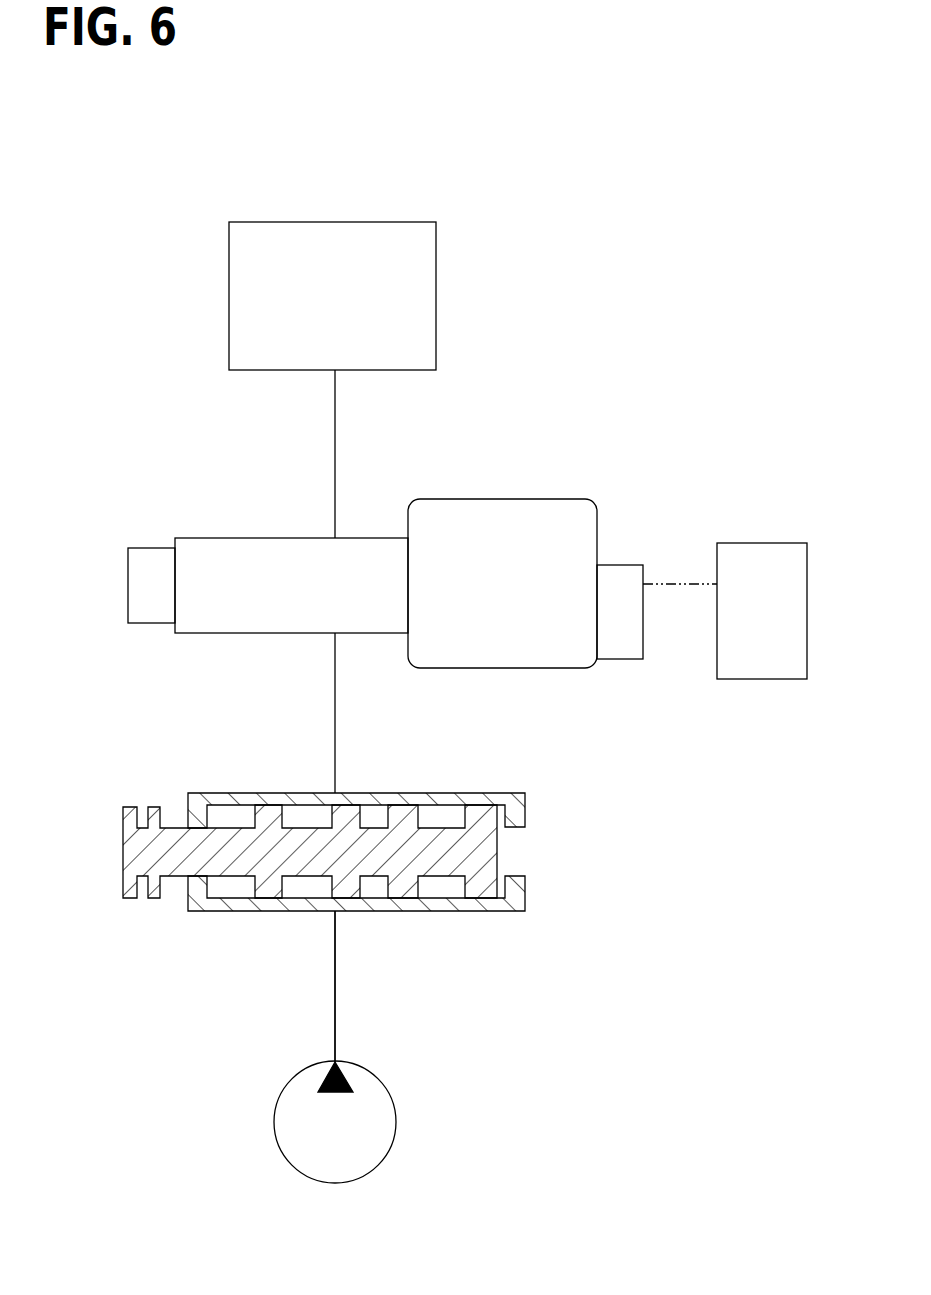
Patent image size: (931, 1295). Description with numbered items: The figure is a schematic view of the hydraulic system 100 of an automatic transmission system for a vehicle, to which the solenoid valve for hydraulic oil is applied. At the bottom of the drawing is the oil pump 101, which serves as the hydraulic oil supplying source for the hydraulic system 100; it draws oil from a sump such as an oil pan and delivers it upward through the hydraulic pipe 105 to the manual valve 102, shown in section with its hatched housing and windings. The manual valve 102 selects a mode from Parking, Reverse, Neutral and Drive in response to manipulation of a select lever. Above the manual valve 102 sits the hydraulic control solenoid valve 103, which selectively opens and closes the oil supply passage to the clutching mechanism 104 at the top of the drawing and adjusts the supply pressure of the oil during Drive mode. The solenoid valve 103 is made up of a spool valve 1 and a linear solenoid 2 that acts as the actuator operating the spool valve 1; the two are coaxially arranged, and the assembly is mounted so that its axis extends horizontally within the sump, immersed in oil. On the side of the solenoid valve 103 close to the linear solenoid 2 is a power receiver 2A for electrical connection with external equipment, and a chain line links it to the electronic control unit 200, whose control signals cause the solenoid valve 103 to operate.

The hydraulic system 100 is at (566, 184).
The clutching mechanism 104 is at (427, 324).
The spool valve 1 is at (267, 612).
The hydraulic control solenoid valve 103 is at (557, 549).
The linear solenoid 2 is at (538, 520).
The power receiver 2A is at (622, 567).
The electronic control unit 200 is at (772, 673).
The manual valve 102 is at (565, 795).
The hydraulic pipe 105 is at (336, 985).
The oil pump 101 is at (393, 1100).